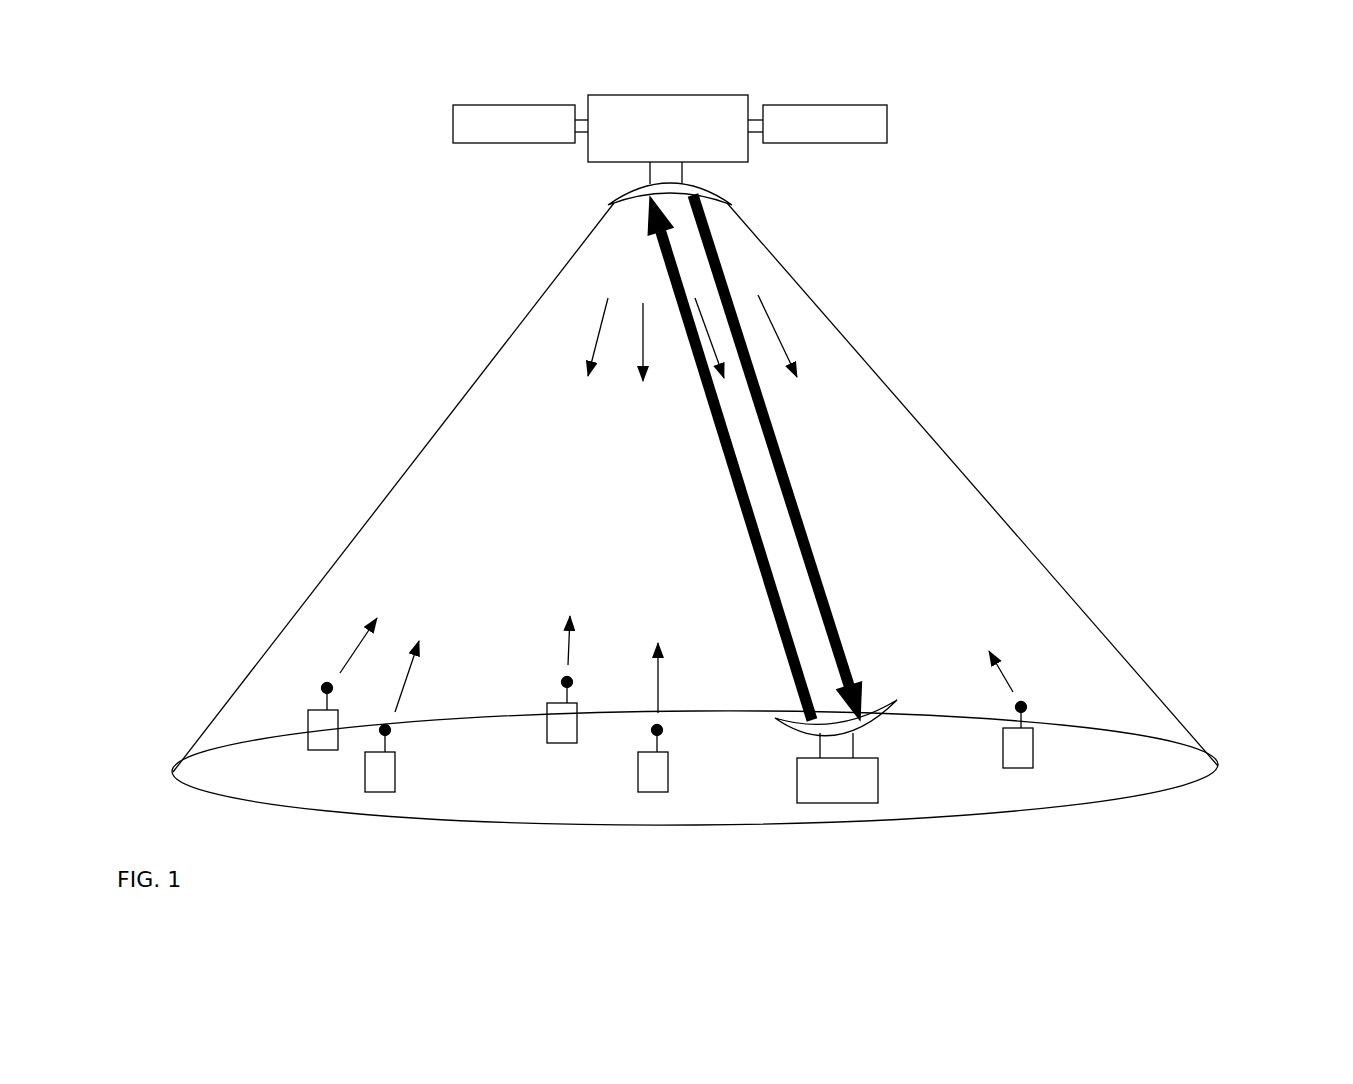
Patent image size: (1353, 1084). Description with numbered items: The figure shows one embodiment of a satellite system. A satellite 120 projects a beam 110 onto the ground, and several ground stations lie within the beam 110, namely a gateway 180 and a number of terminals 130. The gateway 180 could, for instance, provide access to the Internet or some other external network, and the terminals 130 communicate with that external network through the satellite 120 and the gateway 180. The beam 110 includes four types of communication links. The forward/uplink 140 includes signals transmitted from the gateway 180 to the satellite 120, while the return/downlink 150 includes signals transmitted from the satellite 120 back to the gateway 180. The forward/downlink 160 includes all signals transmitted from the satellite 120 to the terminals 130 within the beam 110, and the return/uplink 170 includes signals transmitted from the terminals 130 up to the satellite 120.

The beam 110 is at (1137, 768).
The satellite 120 is at (688, 152).
The terminals 130 is at (327, 743).
The forward/uplink 140 is at (738, 493).
The return/downlink 150 is at (802, 537).
The forward/downlink 160 is at (590, 331).
The return/uplink 170 is at (347, 647).
The gateway 180 is at (845, 790).